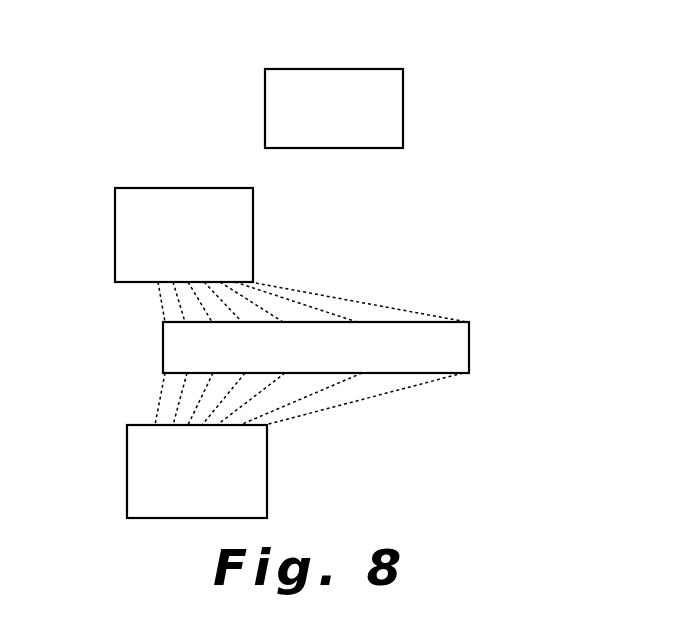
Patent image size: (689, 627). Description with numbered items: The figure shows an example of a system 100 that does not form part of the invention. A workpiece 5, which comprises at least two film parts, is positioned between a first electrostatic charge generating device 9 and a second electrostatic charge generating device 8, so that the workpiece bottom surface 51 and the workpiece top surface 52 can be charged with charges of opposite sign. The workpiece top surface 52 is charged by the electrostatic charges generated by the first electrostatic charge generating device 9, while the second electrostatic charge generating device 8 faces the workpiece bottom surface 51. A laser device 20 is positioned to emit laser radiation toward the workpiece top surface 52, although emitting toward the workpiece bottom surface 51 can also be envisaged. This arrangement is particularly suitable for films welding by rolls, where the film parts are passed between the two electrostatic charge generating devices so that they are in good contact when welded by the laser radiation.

The system 100 is at (172, 98).
The laser device 20 is at (382, 120).
The first electrostatic charge generating device 9 is at (166, 223).
The workpiece top surface 52 is at (398, 323).
The workpiece 5 is at (443, 358).
The workpiece bottom surface 51 is at (395, 375).
The second electrostatic charge generating device 8 is at (177, 483).